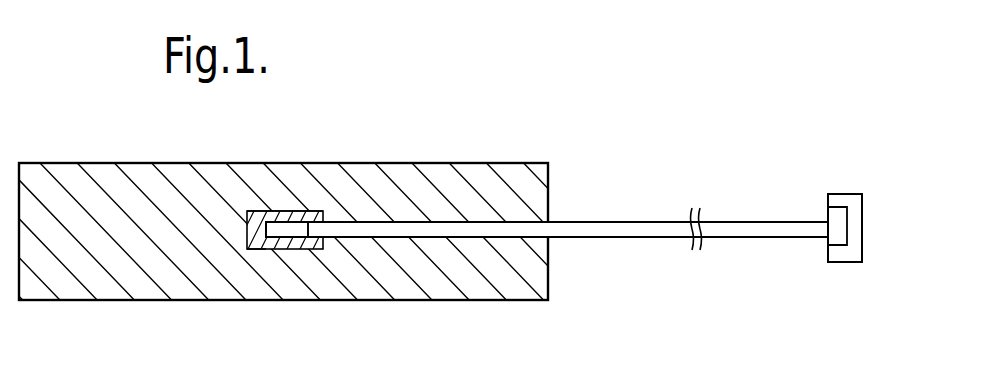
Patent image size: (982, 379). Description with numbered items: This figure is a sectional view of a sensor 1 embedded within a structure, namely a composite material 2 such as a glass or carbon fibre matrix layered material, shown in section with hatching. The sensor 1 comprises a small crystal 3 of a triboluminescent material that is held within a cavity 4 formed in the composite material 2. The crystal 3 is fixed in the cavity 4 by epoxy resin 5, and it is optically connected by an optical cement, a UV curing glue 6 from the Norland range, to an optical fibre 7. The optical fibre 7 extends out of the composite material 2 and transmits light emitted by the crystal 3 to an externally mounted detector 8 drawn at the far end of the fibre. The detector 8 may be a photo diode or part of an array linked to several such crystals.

The sensor 1 is at (295, 210).
The composite material 2 is at (88, 188).
The crystal 3 is at (290, 228).
The cavity 4 is at (262, 211).
The epoxy resin 5 is at (255, 250).
The UV curing glue 6 is at (315, 250).
The optical fibre 7 is at (470, 228).
The detector 8 is at (845, 256).